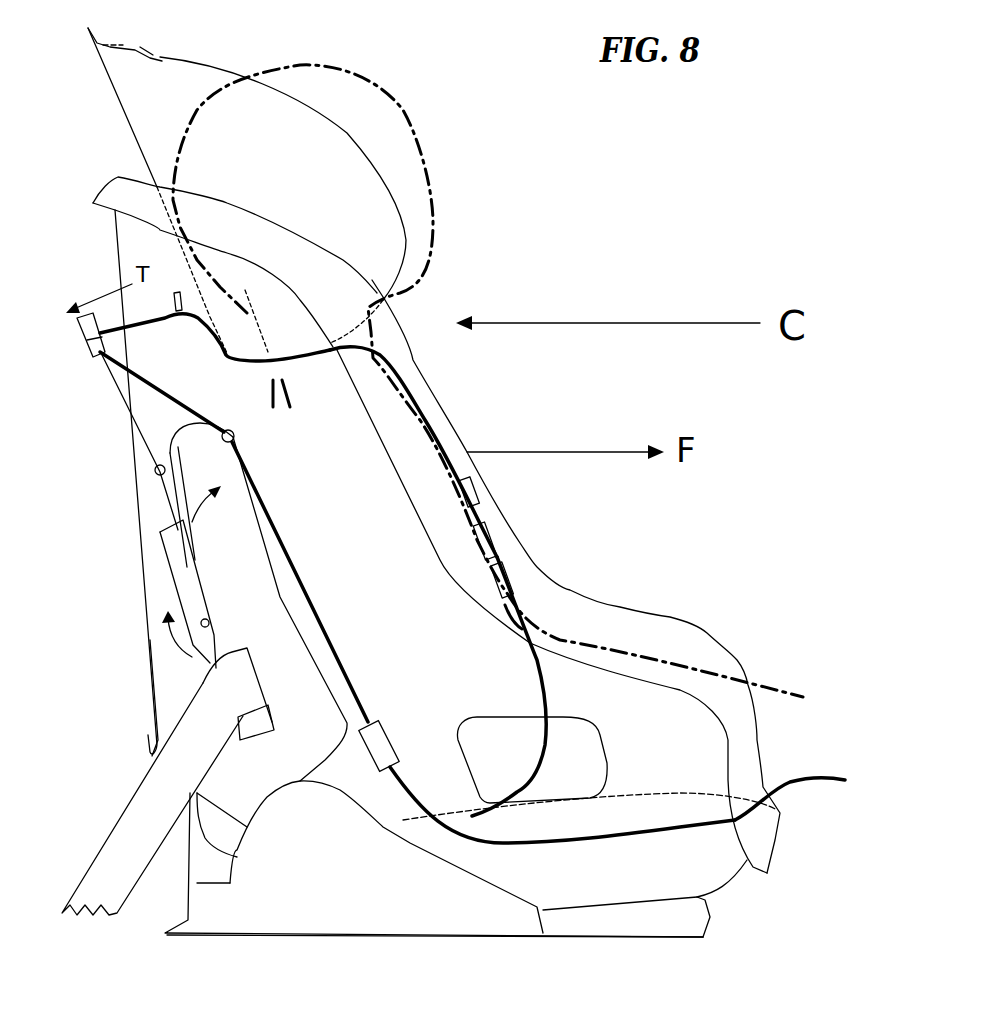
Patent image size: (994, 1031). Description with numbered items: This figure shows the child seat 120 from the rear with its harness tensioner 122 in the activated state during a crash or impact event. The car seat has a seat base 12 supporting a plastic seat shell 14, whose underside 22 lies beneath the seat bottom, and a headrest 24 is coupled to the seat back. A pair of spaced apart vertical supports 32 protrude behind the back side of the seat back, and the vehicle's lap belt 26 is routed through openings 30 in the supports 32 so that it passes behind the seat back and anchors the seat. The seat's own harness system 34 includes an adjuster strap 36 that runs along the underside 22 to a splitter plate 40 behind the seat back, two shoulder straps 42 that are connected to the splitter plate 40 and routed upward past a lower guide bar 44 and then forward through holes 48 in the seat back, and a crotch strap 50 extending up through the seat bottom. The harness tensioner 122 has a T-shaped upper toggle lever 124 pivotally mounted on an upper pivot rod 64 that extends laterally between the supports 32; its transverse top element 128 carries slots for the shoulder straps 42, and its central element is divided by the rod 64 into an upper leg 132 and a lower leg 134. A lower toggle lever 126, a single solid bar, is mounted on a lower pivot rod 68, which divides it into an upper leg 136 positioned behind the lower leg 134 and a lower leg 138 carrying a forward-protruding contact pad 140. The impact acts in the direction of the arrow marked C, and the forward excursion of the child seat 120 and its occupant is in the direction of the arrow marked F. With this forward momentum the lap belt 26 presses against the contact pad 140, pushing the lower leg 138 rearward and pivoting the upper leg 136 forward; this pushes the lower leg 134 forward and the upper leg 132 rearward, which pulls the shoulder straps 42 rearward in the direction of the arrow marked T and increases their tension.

The seat base 12 is at (356, 893).
The seat shell 14 is at (406, 338).
The underside 22 is at (612, 912).
The headrest 24 is at (194, 74).
The lap belt 26 is at (130, 810).
The openings 30 is at (300, 647).
The vertical supports 32 is at (166, 660).
The harness system 34 is at (520, 550).
The adjuster strap 36 is at (792, 776).
The splitter plate 40 is at (388, 740).
The shoulder straps 42 is at (168, 327).
The lower guide bar 44 is at (240, 440).
The holes 48 is at (186, 296).
The crotch strap 50 is at (548, 690).
The upper pivot rod 64 is at (154, 470).
The lower pivot rod 68 is at (210, 618).
The child seat 120 is at (598, 266).
The harness tensioner 122 is at (130, 543).
The upper toggle lever 124 is at (128, 437).
The lower toggle lever 126 is at (205, 583).
The top element 128 is at (80, 338).
The upper leg 132 is at (118, 402).
The lower leg 134 is at (168, 497).
The upper leg 136 is at (175, 565).
The lower leg 138 is at (212, 647).
The contact pad 140 is at (268, 716).